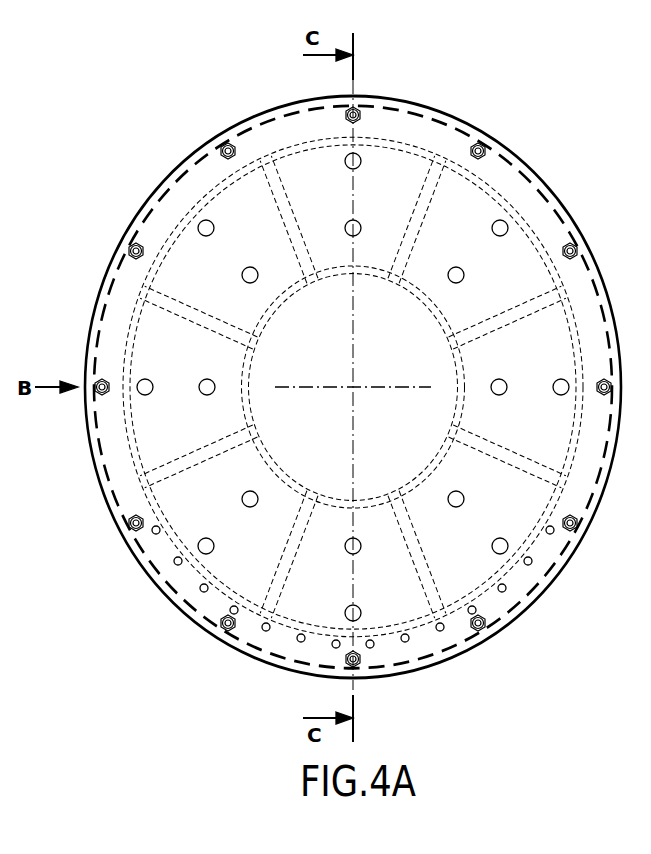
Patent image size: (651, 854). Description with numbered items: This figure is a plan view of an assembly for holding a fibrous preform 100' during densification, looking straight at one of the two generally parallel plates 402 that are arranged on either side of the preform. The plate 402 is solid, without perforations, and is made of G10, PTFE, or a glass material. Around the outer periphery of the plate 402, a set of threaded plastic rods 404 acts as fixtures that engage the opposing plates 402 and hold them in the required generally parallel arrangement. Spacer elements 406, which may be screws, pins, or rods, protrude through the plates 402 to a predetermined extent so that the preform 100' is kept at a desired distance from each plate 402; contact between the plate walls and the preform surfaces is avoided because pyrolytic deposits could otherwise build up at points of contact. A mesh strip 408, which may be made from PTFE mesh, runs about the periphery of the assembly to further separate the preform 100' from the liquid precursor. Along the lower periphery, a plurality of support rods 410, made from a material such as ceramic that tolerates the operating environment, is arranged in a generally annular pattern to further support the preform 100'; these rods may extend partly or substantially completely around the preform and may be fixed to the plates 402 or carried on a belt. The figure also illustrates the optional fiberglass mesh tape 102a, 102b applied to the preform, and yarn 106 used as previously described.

The preform 100' is at (353, 374).
The fiberglass mesh tape 102a is at (262, 320).
The fiberglass mesh tape 102b is at (120, 351).
The yarn 106 is at (130, 312).
The plate 402 is at (518, 626).
The threaded plastic rod 404 is at (480, 143).
The spacer element 406 is at (207, 396).
The mesh strip 408 is at (560, 584).
The support rod 410 is at (374, 650).